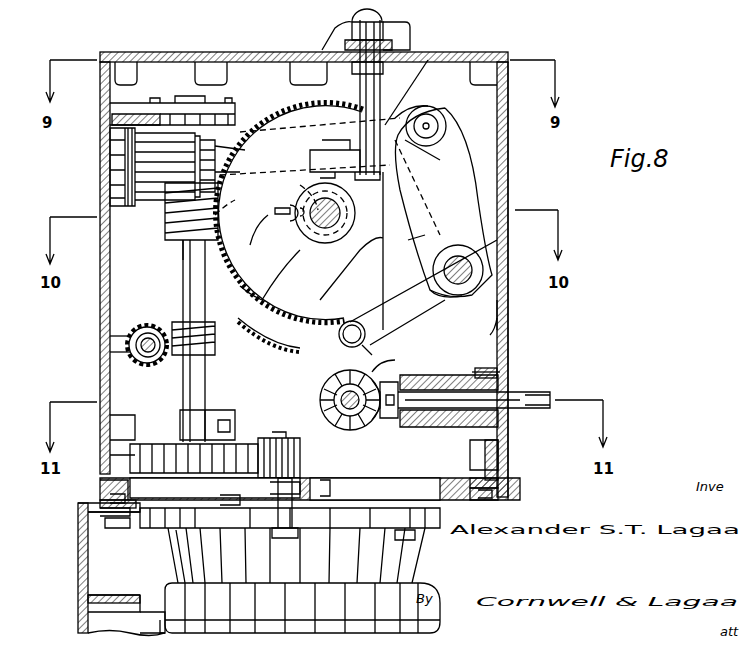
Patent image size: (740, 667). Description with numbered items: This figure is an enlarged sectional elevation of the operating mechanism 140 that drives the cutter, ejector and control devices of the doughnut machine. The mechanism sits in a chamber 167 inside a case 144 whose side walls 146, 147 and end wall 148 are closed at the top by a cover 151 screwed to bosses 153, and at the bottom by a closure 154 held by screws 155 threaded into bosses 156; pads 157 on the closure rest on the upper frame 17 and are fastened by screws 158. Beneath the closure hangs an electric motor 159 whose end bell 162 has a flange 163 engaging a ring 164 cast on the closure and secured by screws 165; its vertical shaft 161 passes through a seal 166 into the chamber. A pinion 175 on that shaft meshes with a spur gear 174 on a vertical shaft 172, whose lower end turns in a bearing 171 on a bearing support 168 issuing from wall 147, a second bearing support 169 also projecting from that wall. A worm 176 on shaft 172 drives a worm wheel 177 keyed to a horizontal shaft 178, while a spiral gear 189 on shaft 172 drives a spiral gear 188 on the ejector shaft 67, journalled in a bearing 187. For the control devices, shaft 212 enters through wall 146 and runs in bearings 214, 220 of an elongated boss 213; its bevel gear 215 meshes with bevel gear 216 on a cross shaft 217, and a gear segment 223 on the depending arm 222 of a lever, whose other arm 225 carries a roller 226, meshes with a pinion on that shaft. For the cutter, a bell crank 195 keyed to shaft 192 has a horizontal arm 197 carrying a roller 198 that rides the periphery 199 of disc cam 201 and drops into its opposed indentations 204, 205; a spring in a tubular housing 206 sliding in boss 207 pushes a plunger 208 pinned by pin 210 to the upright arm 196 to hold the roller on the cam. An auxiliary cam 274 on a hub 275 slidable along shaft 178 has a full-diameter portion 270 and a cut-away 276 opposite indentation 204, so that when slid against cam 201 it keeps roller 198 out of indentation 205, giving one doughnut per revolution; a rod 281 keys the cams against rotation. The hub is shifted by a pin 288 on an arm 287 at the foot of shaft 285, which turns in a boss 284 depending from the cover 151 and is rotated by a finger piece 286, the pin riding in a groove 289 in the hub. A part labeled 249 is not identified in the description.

The cover 151 is at (152, 55).
The bosses 153 is at (200, 76).
The operating mechanism 140 is at (500, 150).
The side wall 146 is at (506, 192).
The case 144 is at (508, 316).
The chamber 167 is at (500, 322).
The end wall 148 is at (110, 300).
The bearing support 169 is at (108, 126).
The boss 207 is at (112, 178).
The tubular housing 206 is at (228, 152).
The portion of auxiliary cam 270 is at (300, 305).
The roller 226 is at (312, 97).
The indentation 205 is at (240, 202).
The pin 288 is at (302, 184).
The groove 289 is at (305, 225).
The horizontally extending shaft 178 is at (325, 237).
The rod 281 is at (270, 202).
The hub 275 is at (290, 264).
The auxiliary cam 274 is at (243, 286).
The cut-away 276 is at (383, 252).
The depending arm 222 is at (276, 337).
The gear segment 223 is at (340, 336).
The shaft 285 is at (388, 190).
The arm 225 is at (385, 38).
The finger piece 286 is at (338, 36).
The boss 284 is at (385, 85).
The arm 287 is at (345, 163).
The upwardly extending arm 196 is at (440, 152).
The bell crank 195 is at (448, 202).
The pin 210 is at (410, 125).
The plunger 208 is at (412, 100).
The indentation 204 is at (425, 196).
The disc cam 201 is at (460, 246).
The shaft 192 is at (488, 246).
The periphery 199 is at (440, 302).
The horizontally extending arm 197 is at (424, 306).
The roller 198 is at (380, 341).
The bracket 249 is at (372, 372).
The bearing 220 is at (478, 370).
The worm 176 is at (175, 241).
The worm wheel 177 is at (198, 273).
The vertically extending shaft 172 is at (205, 378).
The spiral gear 189 is at (214, 341).
The spiral gear 188 is at (165, 367).
The side wall 147 is at (112, 331).
The bearing 187 is at (136, 341).
The shaft 67 is at (135, 353).
The bearing support 168 is at (115, 433).
The bearing 171 is at (206, 424).
The spur gear 174 is at (232, 448).
The pinion 175 is at (268, 440).
The shaft 217 is at (325, 388).
The bevel gear 216 is at (346, 421).
The bevel gear 215 is at (378, 428).
The bearing 214 is at (392, 422).
The elongated boss 213 is at (440, 426).
The shaft 212 is at (520, 388).
The ring 164 is at (412, 492).
The closure 154 is at (503, 455).
The bosses 156 is at (500, 462).
The pads 157 is at (505, 478).
The screws 155 is at (500, 494).
The screws 158 is at (108, 522).
The upper frame 17 is at (85, 578).
The screws 165 is at (88, 582).
The flange 163 is at (175, 530).
The end bell 162 is at (205, 562).
The vertical shaft 161 is at (258, 588).
The seal 166 is at (300, 533).
The electric motor 159 is at (178, 616).